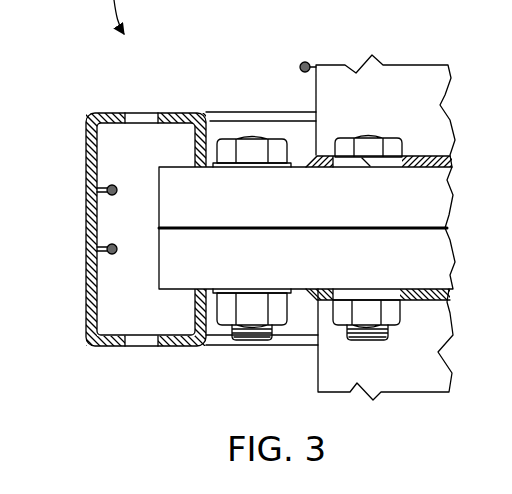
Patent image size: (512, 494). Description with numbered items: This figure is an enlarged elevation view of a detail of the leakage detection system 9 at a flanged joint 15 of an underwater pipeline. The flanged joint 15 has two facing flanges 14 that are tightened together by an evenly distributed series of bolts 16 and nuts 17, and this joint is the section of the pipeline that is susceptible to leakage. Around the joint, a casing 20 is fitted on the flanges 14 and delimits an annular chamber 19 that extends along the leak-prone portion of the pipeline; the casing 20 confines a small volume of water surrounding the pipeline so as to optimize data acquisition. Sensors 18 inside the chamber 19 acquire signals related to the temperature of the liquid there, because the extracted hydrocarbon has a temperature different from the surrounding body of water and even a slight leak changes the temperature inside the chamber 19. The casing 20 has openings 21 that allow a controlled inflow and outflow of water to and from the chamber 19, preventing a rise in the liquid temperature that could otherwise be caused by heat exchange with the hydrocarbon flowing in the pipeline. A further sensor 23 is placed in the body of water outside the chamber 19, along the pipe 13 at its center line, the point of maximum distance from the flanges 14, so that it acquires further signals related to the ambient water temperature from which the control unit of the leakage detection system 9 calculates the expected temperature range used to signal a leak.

The leakage detection system 9 is at (198, 381).
The pipe 13 is at (418, 80).
The flange 14 is at (408, 203).
The flanged joint 15 is at (150, 228).
The bolt 16 is at (255, 150).
The nut 17 is at (278, 310).
The sensor 18 is at (119, 187).
The chamber 19 is at (173, 142).
The casing 20 is at (75, 126).
The opening 21 is at (141, 111).
The sensor 23 is at (305, 58).